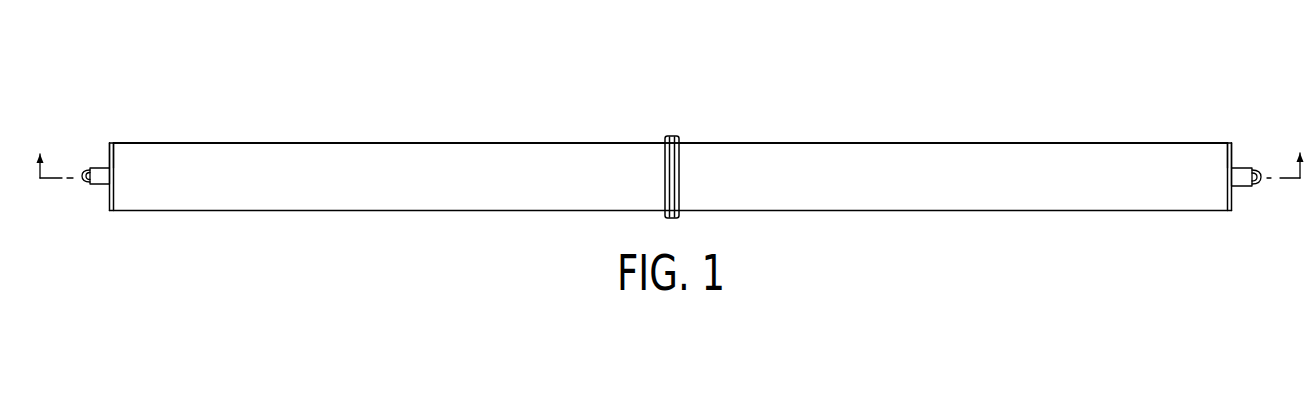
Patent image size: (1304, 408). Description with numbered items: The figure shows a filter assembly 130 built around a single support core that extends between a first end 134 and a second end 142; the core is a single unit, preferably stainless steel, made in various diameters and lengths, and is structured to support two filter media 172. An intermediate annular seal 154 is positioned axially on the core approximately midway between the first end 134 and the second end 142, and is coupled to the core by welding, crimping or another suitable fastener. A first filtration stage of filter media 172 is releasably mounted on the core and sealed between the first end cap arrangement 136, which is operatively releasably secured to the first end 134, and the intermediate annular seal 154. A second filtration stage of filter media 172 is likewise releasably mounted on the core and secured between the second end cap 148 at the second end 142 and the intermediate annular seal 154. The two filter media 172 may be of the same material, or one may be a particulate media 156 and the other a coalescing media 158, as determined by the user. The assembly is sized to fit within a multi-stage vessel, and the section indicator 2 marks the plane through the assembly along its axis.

The filter assembly 130 is at (840, 60).
The first end 134 is at (100, 138).
The first end cap arrangement 136 is at (100, 212).
The second end 142 is at (1242, 137).
The second end cap 148 is at (1232, 202).
The intermediate annular seal 154 is at (680, 132).
The particulate media 156 is at (390, 209).
The coalescing media 158 is at (952, 211).
The filter media 172 is at (348, 130).
The section line 2- 2 is at (668, 146).